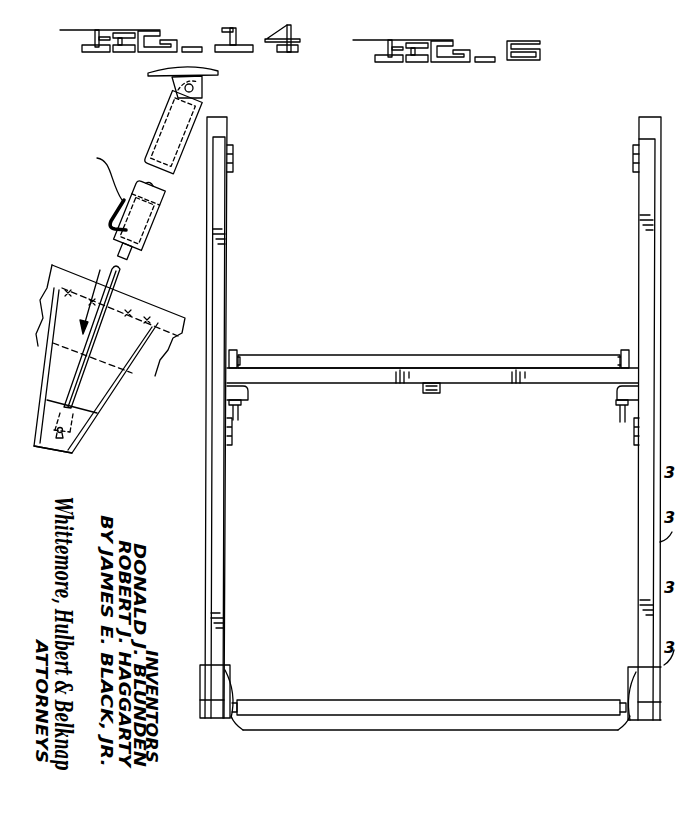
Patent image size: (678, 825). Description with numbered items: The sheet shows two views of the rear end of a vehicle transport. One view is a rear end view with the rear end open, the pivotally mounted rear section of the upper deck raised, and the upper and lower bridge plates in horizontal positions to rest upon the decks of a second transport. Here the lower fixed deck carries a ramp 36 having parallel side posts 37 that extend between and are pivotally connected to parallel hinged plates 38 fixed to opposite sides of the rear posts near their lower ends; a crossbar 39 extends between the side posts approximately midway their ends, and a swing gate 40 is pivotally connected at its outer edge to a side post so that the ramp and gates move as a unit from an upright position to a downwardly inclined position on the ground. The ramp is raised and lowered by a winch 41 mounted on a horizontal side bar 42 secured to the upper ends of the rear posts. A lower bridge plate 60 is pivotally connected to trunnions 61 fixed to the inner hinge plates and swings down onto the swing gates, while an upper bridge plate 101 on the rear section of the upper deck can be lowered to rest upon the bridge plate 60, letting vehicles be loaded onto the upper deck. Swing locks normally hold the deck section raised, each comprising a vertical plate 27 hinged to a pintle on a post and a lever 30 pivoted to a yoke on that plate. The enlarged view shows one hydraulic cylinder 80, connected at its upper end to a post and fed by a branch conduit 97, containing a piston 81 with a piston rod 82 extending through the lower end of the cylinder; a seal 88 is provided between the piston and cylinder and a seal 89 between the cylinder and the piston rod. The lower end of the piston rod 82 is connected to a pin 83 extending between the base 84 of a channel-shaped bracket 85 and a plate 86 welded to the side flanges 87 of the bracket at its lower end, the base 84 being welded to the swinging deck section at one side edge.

In FIG. 14, the horizontal side bar 42 is at (218, 71).
In FIG. 14, the branch conduit 97 is at (91, 174).
In FIG. 14, the seal 88 is at (112, 208).
In FIG. 14, the hydraulic cylinder 80 is at (155, 200).
In FIG. 14, the piston 81 is at (158, 210).
In FIG. 14, the seal 89 is at (117, 248).
In FIG. 14, the channel-shaped bracket 85 is at (87, 292).
In FIG. 14, the piston rod 82 is at (124, 279).
In FIG. 14, the base of channel-shaped bracket 84 is at (97, 392).
In FIG. 14, the side flanges 87 is at (105, 407).
In FIG. 14, the plate 86 is at (78, 422).
In FIG. 14, the pin 83 is at (58, 433).
In FIG. 6, the swing gate 40 is at (217, 325).
In FIG. 6, the winch 41 is at (645, 351).
In FIG. 6, the bridge plate 101 is at (323, 362).
In FIG. 6, the crossbar 39 is at (365, 377).
In FIG. 6, the vertical plate 27 is at (245, 393).
In FIG. 6, the lever 30 is at (240, 413).
In FIG. 6, the ramp 36 is at (207, 548).
In FIG. 6, the side post 37 is at (213, 592).
In FIG. 6, the hinged plate 38 is at (203, 668).
In FIG. 6, the bridge plate 60 is at (500, 700).
In FIG. 6, the trunnions 61 is at (233, 730).